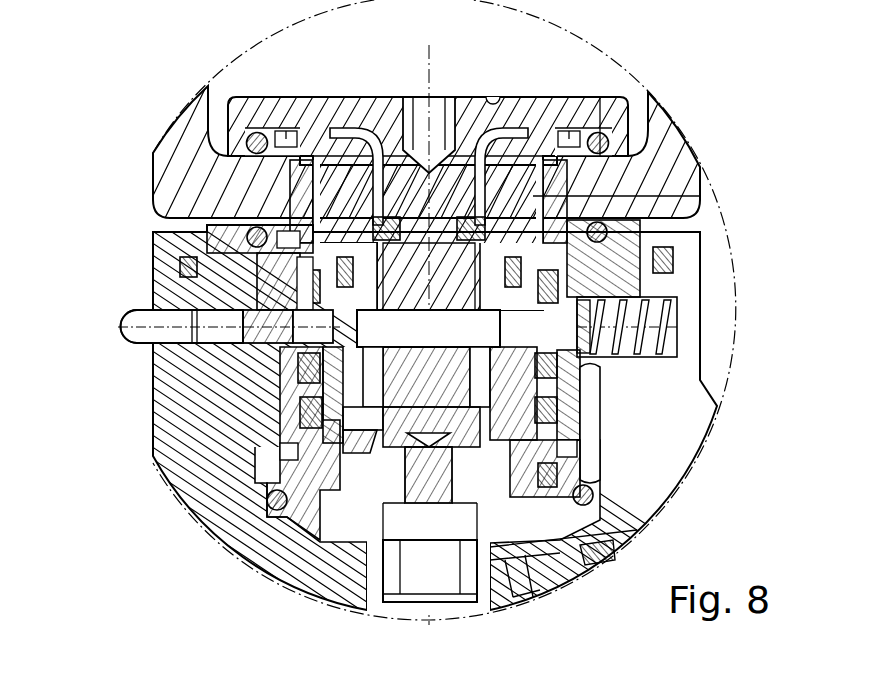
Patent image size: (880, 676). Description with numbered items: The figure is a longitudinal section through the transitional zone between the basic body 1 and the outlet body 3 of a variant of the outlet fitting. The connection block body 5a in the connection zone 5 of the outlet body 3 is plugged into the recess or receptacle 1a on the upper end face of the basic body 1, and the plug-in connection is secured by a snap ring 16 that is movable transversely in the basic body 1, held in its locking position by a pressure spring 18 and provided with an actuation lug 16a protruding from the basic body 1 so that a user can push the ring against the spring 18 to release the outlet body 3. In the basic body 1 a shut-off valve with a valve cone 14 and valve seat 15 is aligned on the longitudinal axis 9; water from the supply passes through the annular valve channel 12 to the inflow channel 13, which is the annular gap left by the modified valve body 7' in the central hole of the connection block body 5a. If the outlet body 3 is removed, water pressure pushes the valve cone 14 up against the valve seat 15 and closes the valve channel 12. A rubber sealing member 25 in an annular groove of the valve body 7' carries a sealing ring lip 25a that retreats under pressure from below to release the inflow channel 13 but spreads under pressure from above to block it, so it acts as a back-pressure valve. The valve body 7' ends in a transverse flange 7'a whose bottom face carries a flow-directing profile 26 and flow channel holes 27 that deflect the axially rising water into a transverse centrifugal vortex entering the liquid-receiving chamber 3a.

The basic body 1 is at (712, 405).
The recess or receptacle 1a is at (580, 286).
The outlet body 3 is at (683, 137).
The liquid-receiving chamber 3a is at (633, 100).
The connection zone 5 is at (700, 196).
The connection block body 5a is at (690, 196).
The valve body 7' is at (428, 203).
The transverse flange 7'a is at (428, 176).
The longitudinal axis 9 is at (432, 60).
The valve channel 12 is at (327, 497).
The inflow channel 13 is at (377, 310).
The valve cone 14 is at (470, 490).
The valve seat 15 is at (517, 483).
The snap ring 16 is at (180, 332).
The actuation lug 16a is at (133, 310).
The pressure spring 18 is at (657, 313).
The rubber sealing member 25 is at (365, 180).
The sealing ring lip 25a is at (523, 213).
The flow-directing profile 26 is at (330, 128).
The flow channel holes 27 is at (487, 213).